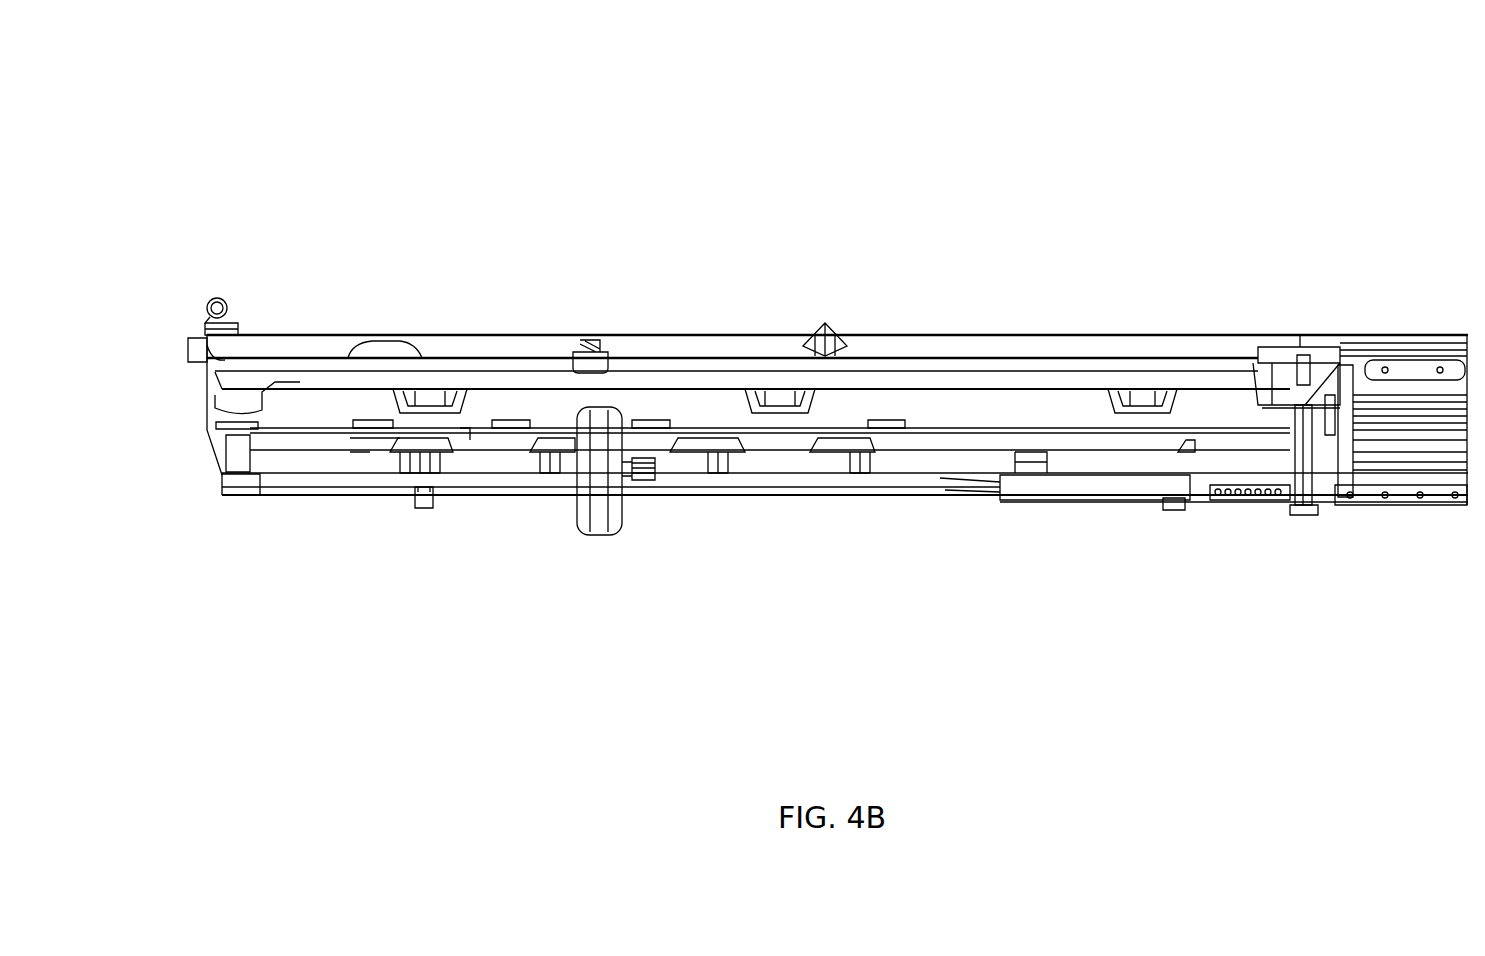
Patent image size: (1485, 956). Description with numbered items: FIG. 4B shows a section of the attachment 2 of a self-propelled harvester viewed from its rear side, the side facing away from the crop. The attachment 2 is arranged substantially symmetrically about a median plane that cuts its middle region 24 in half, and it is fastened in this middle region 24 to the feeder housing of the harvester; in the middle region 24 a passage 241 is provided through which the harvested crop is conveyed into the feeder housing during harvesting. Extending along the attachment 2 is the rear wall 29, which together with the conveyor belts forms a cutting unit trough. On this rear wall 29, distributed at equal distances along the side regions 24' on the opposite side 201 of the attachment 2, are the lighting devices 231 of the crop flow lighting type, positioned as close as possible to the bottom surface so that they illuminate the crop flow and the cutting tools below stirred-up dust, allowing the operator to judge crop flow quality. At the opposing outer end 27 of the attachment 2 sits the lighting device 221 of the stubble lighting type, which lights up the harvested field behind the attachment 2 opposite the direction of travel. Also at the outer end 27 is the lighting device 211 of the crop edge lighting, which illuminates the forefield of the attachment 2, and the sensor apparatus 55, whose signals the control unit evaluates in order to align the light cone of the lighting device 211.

The attachment 2 is at (538, 160).
The rear wall 29 is at (950, 347).
The lighting device 211 is at (224, 302).
The sensor apparatus 55 is at (188, 345).
The lighting device 221 is at (598, 350).
The lighting device 231 is at (436, 395).
The side region 24' is at (845, 529).
The side 201 is at (191, 558).
The outer end 27 is at (225, 513).
The middle region 24 is at (1310, 456).
The passage 241 is at (1400, 505).